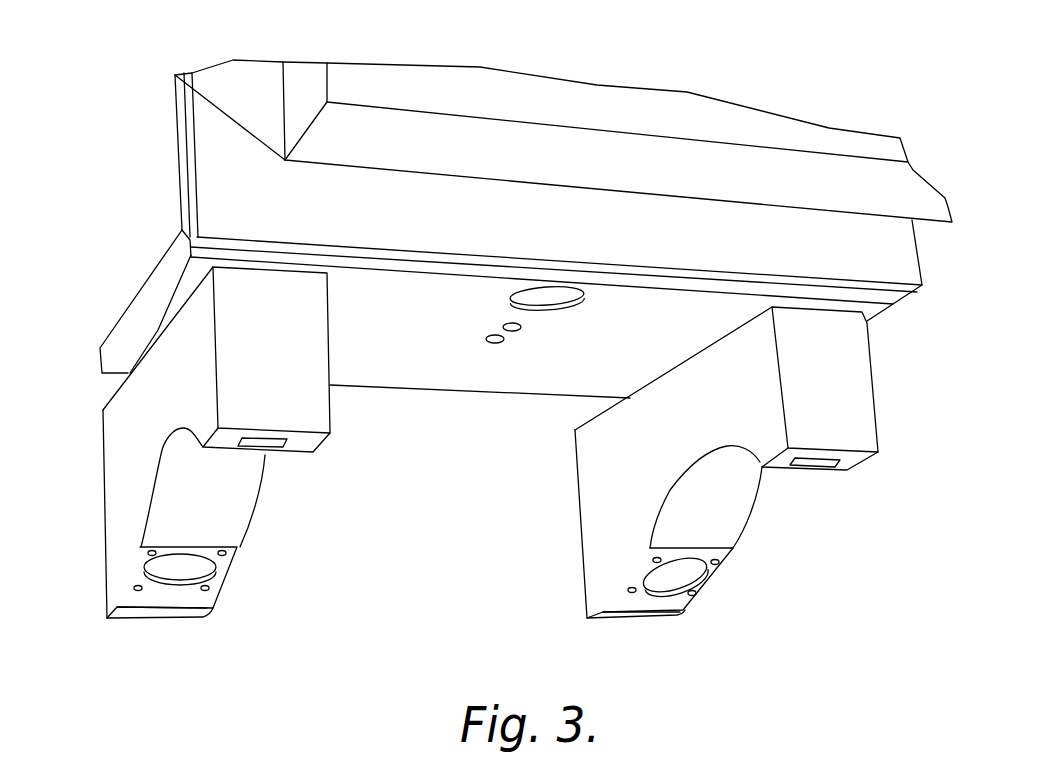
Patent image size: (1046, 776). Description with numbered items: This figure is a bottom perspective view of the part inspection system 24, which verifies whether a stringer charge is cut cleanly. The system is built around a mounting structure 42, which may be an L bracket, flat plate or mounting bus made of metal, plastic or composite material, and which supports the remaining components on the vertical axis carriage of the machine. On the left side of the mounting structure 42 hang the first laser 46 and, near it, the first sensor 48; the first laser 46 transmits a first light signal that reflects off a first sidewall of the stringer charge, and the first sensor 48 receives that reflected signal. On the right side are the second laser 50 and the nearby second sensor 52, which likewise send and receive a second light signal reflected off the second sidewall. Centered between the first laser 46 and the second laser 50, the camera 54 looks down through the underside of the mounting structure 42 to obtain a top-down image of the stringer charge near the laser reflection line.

The part inspection system 24 is at (145, 227).
The mounting structure 42 is at (190, 130).
The first laser 46 is at (282, 459).
The first sensor 48 is at (228, 586).
The second laser 50 is at (824, 475).
The second sensor 52 is at (713, 583).
The camera 54 is at (548, 327).